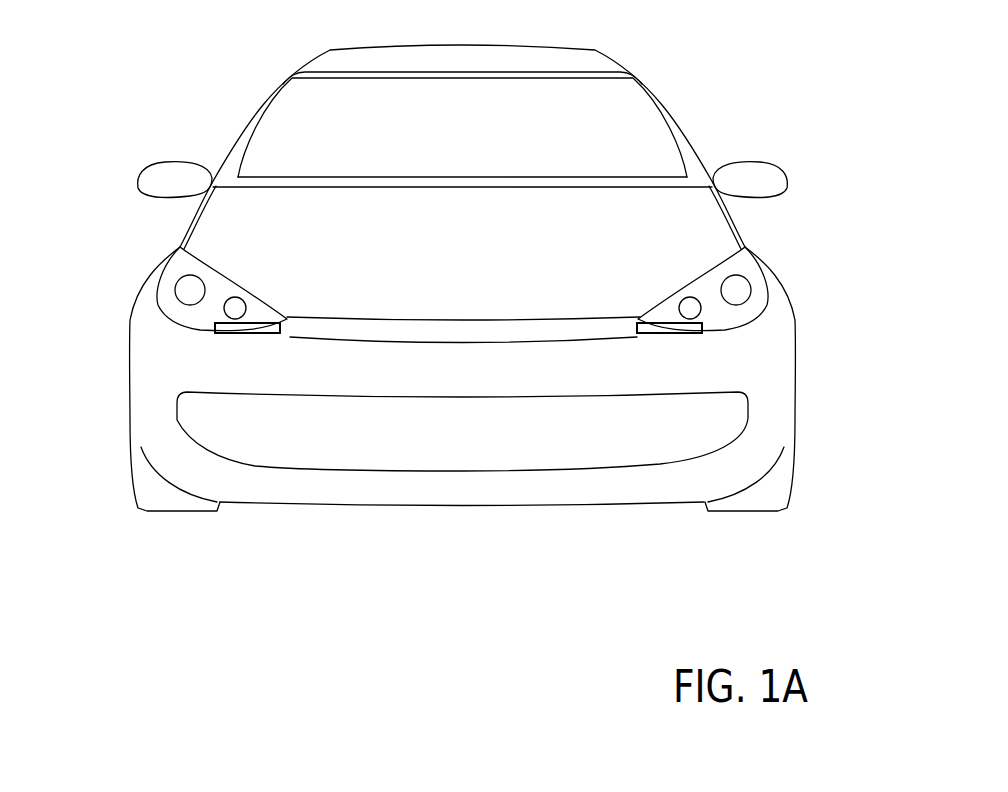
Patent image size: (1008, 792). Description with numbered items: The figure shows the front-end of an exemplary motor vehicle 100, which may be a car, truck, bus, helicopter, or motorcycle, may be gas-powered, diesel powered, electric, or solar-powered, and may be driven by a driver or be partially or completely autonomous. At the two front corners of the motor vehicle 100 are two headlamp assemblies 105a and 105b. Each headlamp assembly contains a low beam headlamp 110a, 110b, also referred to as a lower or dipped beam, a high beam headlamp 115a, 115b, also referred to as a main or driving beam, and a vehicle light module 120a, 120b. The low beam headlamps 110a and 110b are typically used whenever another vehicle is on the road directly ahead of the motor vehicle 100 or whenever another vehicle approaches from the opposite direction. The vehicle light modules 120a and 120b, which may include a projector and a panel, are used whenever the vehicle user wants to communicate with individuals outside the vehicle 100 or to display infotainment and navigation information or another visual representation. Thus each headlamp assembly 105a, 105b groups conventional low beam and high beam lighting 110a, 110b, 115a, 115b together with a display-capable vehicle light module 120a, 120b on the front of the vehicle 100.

The motor vehicle 100 is at (672, 91).
The headlamp assembly 105a is at (165, 250).
The headlamp assembly 105b is at (742, 262).
The low beam headlamp 110a is at (178, 280).
The low beam headlamp 110b is at (751, 286).
The high beam headlamp 115a is at (215, 327).
The high beam headlamp 115b is at (703, 333).
The vehicle light module 120a is at (217, 332).
The vehicle light module 120b is at (677, 335).